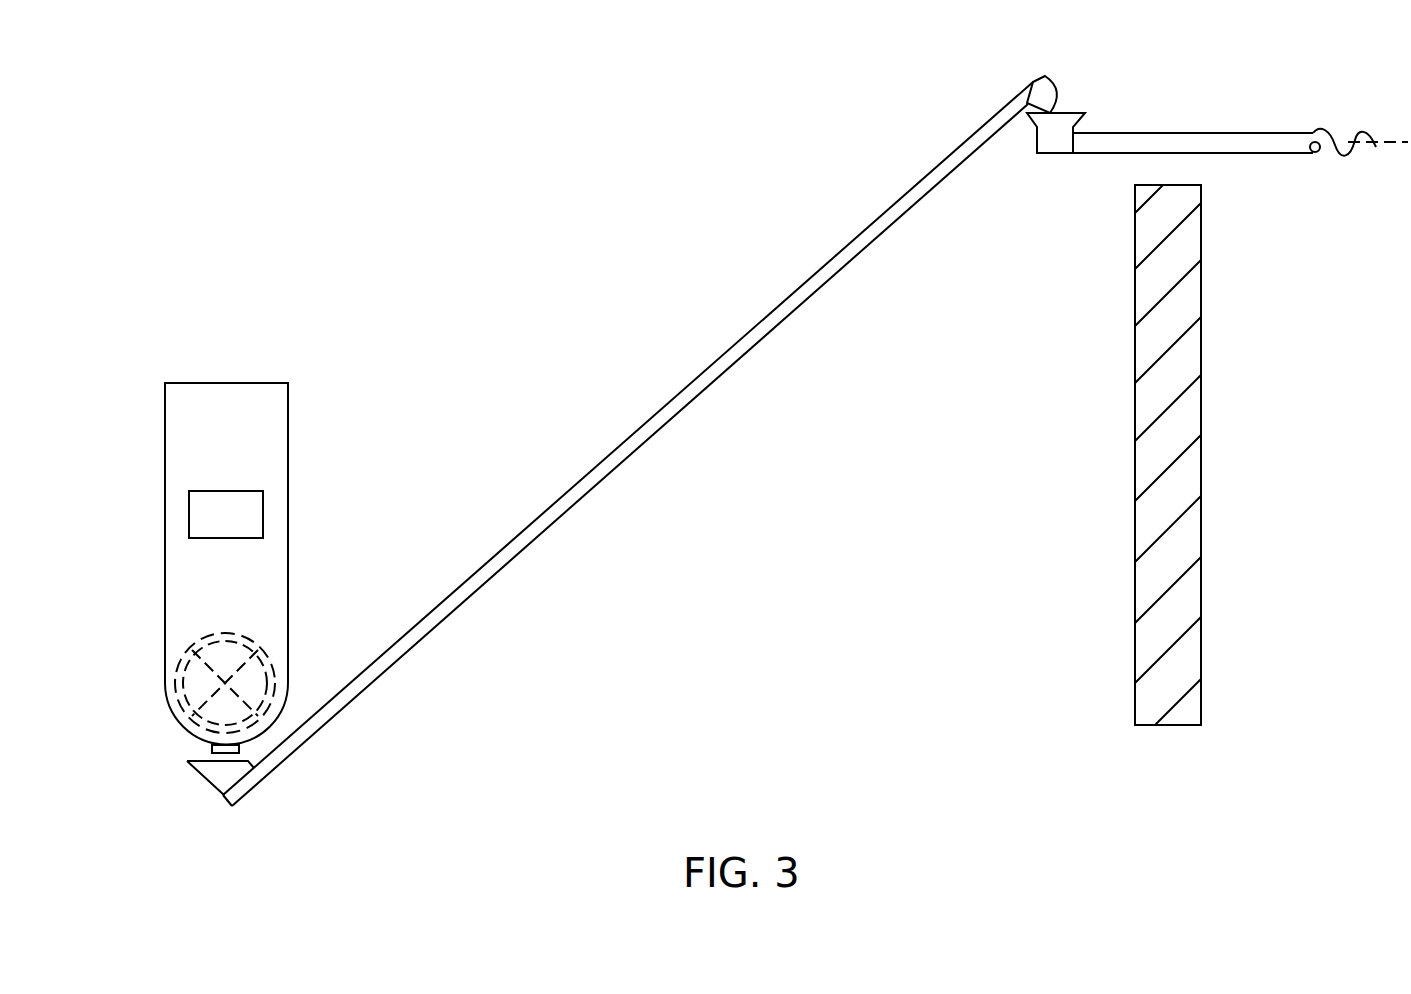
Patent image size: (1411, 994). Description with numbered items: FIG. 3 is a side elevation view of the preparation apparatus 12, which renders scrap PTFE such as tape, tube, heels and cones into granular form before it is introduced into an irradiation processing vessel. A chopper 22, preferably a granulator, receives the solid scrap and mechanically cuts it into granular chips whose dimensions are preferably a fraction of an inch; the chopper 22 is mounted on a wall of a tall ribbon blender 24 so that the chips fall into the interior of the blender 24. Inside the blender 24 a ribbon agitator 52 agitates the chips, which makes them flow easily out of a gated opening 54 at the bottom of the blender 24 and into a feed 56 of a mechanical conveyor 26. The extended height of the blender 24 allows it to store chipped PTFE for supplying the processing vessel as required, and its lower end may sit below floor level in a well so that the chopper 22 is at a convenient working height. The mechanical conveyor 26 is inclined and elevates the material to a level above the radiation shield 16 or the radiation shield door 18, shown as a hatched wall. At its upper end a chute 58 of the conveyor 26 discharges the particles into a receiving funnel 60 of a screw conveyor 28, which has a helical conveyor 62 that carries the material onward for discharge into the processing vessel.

The preparation apparatus 12 is at (595, 364).
The ribbon blender 24 is at (277, 449).
The chopper 22 is at (260, 513).
The ribbon agitator 52 is at (252, 642).
The gated opening 54 is at (207, 745).
The feed 56 is at (203, 782).
The mechanical conveyor 26 is at (455, 612).
The chute 58 is at (1048, 90).
The receiving funnel 60 is at (1077, 113).
The screw conveyor 28 is at (1097, 157).
The helical conveyor 62 is at (1350, 153).
The radiation shield door 18 is at (1200, 373).
The radiation shield 16 is at (1168, 455).